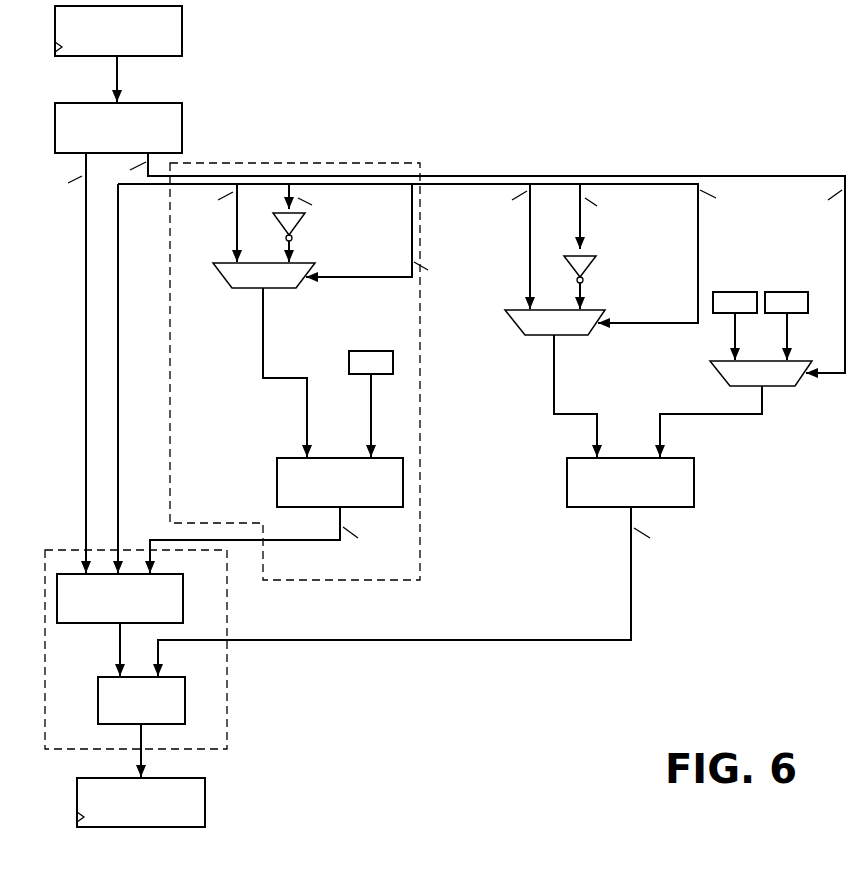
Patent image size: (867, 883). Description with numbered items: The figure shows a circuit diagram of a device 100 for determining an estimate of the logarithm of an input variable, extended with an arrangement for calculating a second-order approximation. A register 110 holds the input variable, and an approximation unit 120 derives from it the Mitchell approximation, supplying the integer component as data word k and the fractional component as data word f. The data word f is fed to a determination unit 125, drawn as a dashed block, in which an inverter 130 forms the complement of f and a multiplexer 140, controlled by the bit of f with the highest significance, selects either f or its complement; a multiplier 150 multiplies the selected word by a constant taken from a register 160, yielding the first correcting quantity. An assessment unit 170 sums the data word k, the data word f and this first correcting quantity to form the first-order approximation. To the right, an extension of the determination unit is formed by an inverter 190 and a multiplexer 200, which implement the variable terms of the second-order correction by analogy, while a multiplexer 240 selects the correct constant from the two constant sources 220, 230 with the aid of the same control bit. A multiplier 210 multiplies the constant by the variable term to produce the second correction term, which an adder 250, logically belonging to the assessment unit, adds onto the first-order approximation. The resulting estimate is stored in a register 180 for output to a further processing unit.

The device 100 is at (528, 131).
The register 110 is at (172, 22).
The approximation unit 120 is at (172, 118).
The determination unit 125 is at (358, 163).
The inverter 130 is at (293, 238).
The multiplexer 140 is at (245, 290).
The multiplier 150 is at (284, 482).
The register 160 is at (370, 358).
The assessment unit 170 is at (80, 616).
The register 180 is at (197, 800).
The inverter 190 is at (584, 279).
The multiplexer 200 is at (535, 337).
The multiplier 210 is at (694, 482).
The constant register 220 is at (737, 300).
The constant register 230 is at (790, 300).
The multiplexer 240 is at (774, 388).
The adder 250 is at (185, 700).